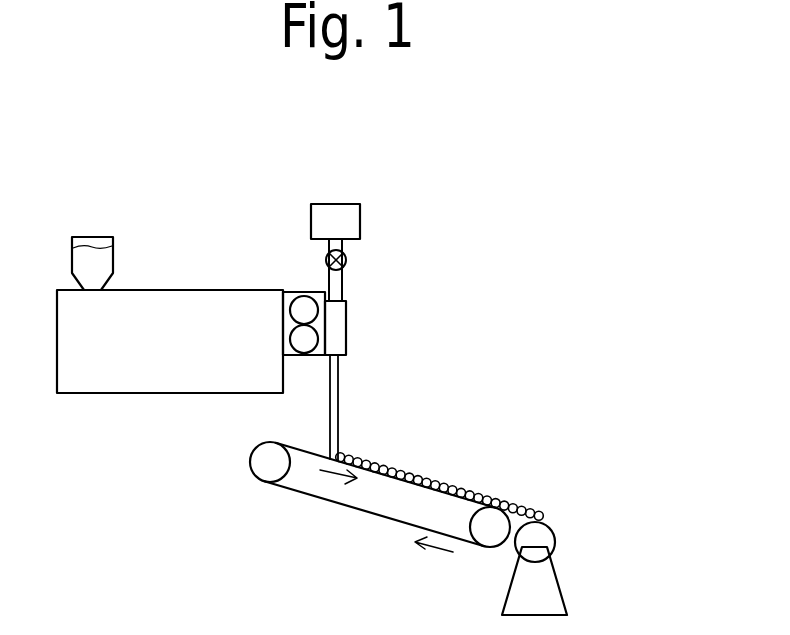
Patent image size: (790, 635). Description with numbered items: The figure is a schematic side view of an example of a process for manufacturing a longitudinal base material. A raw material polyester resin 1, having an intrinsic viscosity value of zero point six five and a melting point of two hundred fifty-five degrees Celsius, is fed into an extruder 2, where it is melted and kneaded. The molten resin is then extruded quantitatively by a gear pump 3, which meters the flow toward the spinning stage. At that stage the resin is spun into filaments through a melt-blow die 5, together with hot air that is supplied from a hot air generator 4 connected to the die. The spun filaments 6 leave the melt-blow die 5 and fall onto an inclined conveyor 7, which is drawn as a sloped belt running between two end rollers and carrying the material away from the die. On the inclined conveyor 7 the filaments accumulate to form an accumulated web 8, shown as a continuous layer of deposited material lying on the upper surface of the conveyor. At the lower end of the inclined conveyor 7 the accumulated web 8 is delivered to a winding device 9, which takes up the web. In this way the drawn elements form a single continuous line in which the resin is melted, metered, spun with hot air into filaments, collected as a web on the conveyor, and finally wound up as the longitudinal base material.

The raw material polyester resin 1 is at (91, 263).
The extruder 2 is at (172, 308).
The gear pump 3 is at (302, 304).
The hot air generator 4 is at (349, 224).
The melt-blow die 5 is at (338, 332).
The spun filaments 6 is at (338, 412).
The inclined conveyor 7 is at (266, 463).
The accumulated web 8 is at (444, 480).
The winding device 9 is at (537, 592).